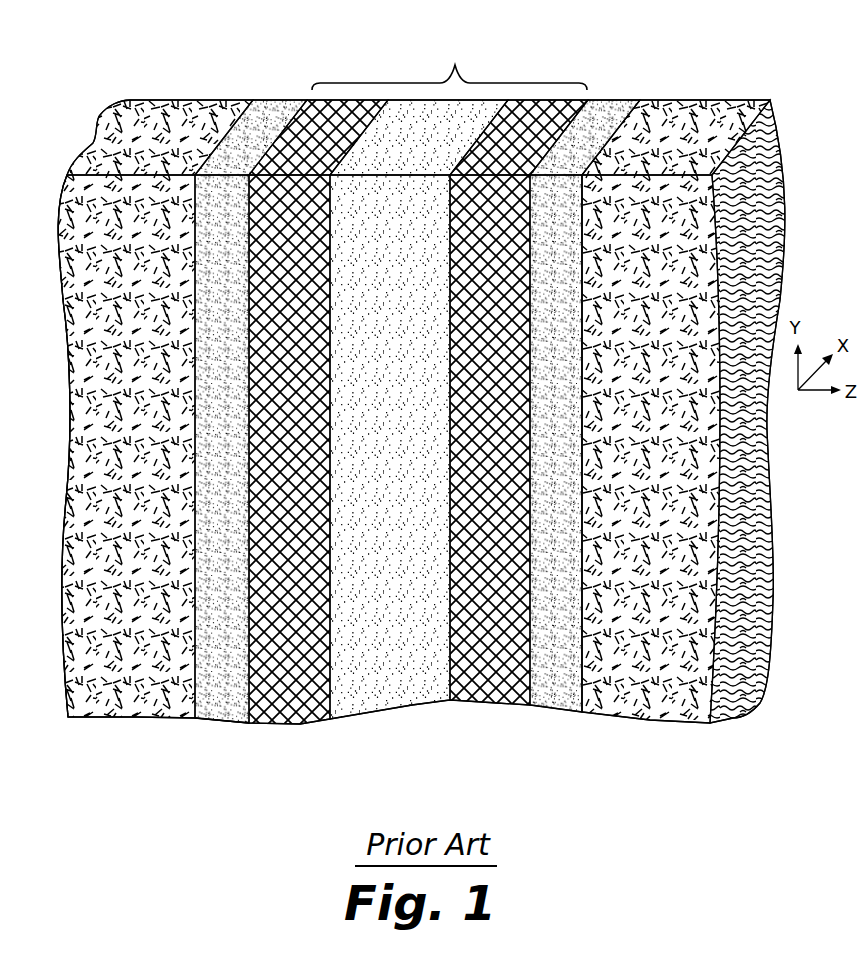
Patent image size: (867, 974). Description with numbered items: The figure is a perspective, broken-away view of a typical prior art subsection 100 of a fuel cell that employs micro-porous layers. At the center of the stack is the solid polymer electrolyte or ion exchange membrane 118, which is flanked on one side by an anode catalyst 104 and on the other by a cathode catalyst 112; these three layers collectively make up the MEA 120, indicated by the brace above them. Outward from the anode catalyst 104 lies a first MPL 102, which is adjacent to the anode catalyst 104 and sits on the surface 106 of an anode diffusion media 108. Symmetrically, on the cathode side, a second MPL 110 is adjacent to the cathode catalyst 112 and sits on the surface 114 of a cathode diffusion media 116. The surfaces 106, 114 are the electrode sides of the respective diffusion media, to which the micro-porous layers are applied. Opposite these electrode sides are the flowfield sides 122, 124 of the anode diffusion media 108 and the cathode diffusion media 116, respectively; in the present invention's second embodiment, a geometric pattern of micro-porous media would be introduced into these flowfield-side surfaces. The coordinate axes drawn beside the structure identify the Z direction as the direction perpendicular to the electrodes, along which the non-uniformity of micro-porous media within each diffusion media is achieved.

The subsection of a fuel cell 100 is at (712, 83).
The first MPL 102 is at (238, 722).
The anode catalyst 104 is at (298, 725).
The surface of the anode diffusion media 106 is at (198, 717).
The anode diffusion media 108 is at (137, 717).
The second MPL 110 is at (527, 710).
The cathode catalyst 112 is at (497, 703).
The surface of the cathode diffusion media 114 is at (582, 720).
The cathode diffusion media 116 is at (650, 723).
The solid polymer electrolyte or ion exchange membrane 118 is at (412, 705).
The MEA 120 is at (449, 61).
The flowfield side of the anode diffusion media 122 is at (58, 213).
The flowfield side of the cathode diffusion media 124 is at (762, 678).